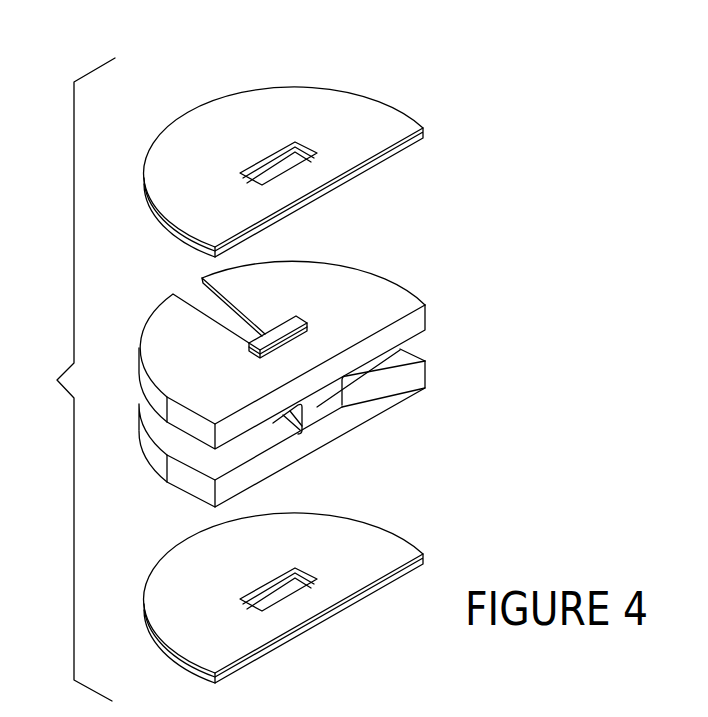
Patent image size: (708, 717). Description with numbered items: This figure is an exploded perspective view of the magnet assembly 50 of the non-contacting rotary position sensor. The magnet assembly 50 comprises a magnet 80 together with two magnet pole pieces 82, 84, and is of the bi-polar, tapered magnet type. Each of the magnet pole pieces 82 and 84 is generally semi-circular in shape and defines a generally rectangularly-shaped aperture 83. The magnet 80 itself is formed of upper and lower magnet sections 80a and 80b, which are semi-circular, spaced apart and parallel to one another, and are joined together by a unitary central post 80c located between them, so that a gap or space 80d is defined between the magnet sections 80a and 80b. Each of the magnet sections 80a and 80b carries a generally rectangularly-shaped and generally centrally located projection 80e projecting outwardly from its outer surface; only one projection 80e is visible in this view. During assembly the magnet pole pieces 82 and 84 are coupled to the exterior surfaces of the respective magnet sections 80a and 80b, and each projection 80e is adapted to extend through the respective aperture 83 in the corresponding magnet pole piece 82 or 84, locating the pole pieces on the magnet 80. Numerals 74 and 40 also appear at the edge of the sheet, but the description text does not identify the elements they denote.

The magnet assembly 50 is at (61, 379).
The magnet pole piece 82 is at (390, 103).
The aperture 83 is at (286, 144).
The magnet pole piece 84 is at (377, 526).
The magnet 80 is at (332, 370).
The magnet section 80a is at (413, 323).
The magnet section 80b is at (408, 383).
The central post 80c is at (318, 405).
The gap 80d is at (205, 465).
The projection 80e is at (287, 315).
The element 74 is at (405, 710).
The element 40 is at (694, 710).